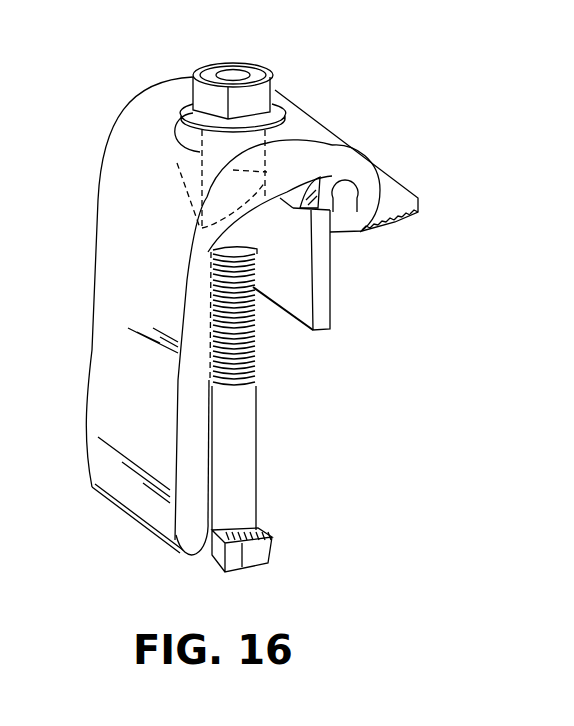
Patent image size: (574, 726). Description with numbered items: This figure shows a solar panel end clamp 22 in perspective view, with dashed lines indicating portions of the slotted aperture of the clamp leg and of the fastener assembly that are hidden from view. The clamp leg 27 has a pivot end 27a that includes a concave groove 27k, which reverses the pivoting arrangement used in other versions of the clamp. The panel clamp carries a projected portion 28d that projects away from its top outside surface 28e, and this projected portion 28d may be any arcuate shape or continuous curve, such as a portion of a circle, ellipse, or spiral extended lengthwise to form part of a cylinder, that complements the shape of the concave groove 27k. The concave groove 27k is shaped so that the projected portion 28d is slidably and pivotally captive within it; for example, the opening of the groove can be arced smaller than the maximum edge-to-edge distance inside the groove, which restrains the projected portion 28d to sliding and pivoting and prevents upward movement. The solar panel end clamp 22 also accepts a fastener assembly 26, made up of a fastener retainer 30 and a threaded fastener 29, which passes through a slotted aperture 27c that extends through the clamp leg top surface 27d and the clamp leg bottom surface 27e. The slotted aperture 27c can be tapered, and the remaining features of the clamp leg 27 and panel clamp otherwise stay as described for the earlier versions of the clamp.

The solar panel end clamp 22 is at (373, 104).
The fastener assembly 26 is at (263, 316).
The clamp leg 27 is at (83, 286).
The pivot end 27a is at (363, 150).
The slotted aperture 27c is at (188, 171).
The clamp leg top surface 27d is at (168, 82).
The clamp leg bottom surface 27e is at (283, 200).
The concave groove 27k is at (355, 172).
The projected portion 28d is at (370, 218).
The top outside surface 28e is at (408, 199).
The threaded fastener 29 is at (262, 430).
The fastener retainer 30 is at (178, 172).